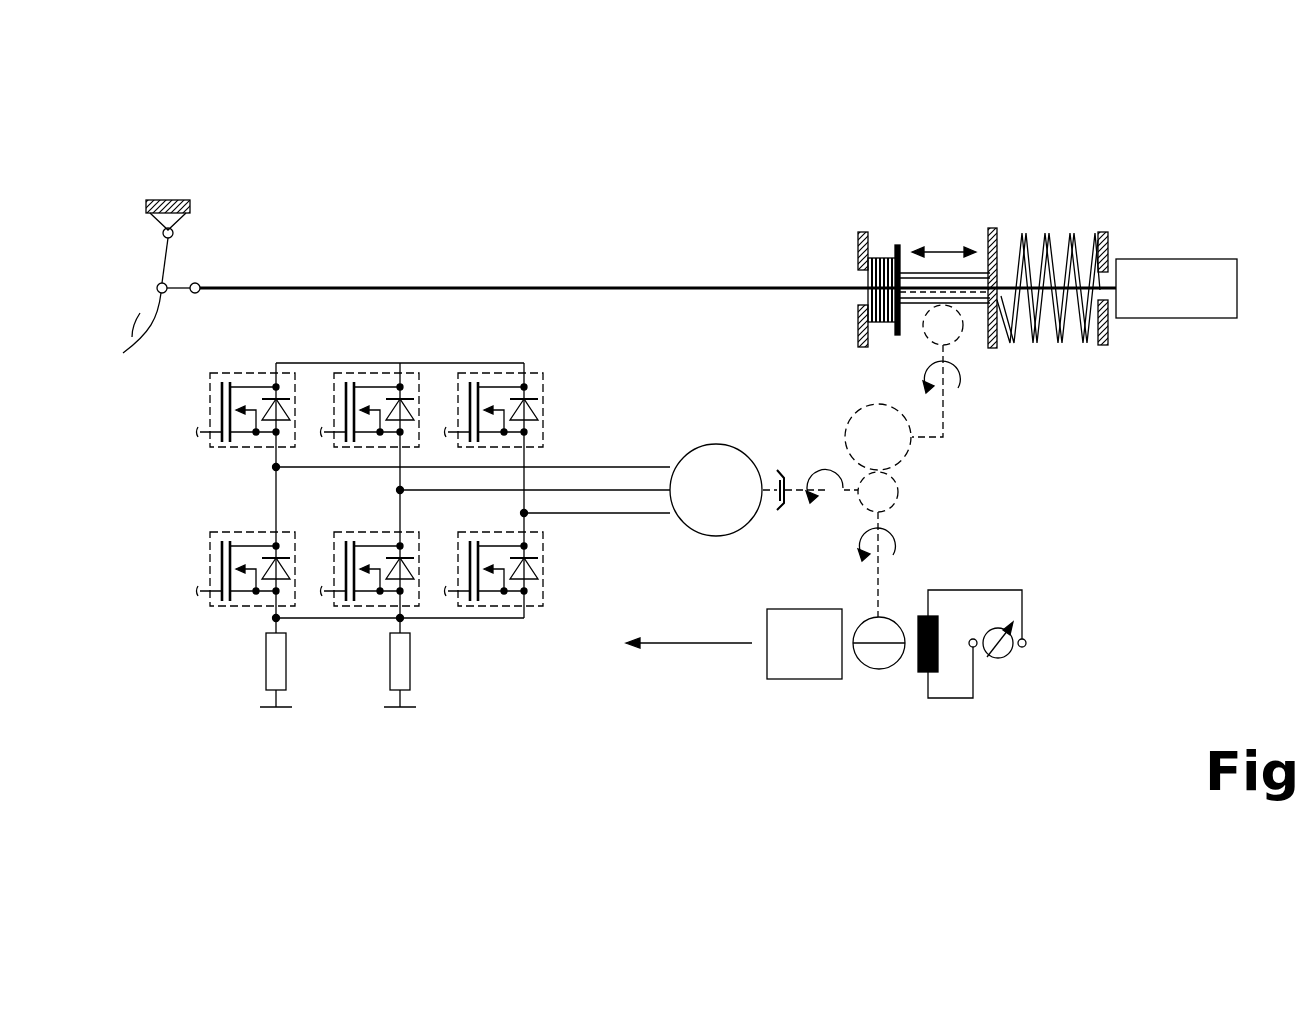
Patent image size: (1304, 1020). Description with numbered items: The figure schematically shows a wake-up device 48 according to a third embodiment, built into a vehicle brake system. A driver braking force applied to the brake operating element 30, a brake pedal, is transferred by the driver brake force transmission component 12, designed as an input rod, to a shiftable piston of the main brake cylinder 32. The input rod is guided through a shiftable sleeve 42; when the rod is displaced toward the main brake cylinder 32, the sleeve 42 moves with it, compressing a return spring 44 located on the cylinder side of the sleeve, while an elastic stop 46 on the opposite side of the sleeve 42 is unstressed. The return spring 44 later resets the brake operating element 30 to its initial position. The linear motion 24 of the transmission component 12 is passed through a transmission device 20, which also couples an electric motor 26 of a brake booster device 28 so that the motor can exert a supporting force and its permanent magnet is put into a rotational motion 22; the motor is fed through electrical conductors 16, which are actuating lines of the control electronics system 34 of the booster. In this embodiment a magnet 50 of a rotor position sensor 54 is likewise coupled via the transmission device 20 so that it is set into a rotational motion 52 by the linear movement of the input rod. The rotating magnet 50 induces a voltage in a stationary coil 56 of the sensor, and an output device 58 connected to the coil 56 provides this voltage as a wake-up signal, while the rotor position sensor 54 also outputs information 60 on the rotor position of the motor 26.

The driver brake force transmission component 12 is at (645, 285).
The electrical conductor 16 is at (640, 513).
The transmission device 20 is at (943, 421).
The rotational motion 22 is at (826, 509).
The linear motion 24 is at (945, 249).
The electric motor 26 is at (733, 533).
The brake booster device 28 is at (572, 376).
The brake operating element 30 is at (162, 258).
The main brake cylinder 32 is at (1228, 288).
The control electronics system 34 is at (345, 660).
The sleeve 42 is at (905, 248).
The return spring 44 is at (1035, 342).
The elastic stop 46 is at (880, 256).
The wake-up device 48 is at (922, 722).
The magnet 50 is at (880, 670).
The rotational motion 52 is at (895, 530).
The rotor position sensor 54 is at (805, 670).
The coil 56 is at (943, 612).
The output device 58 is at (1005, 658).
The information 60 is at (710, 645).